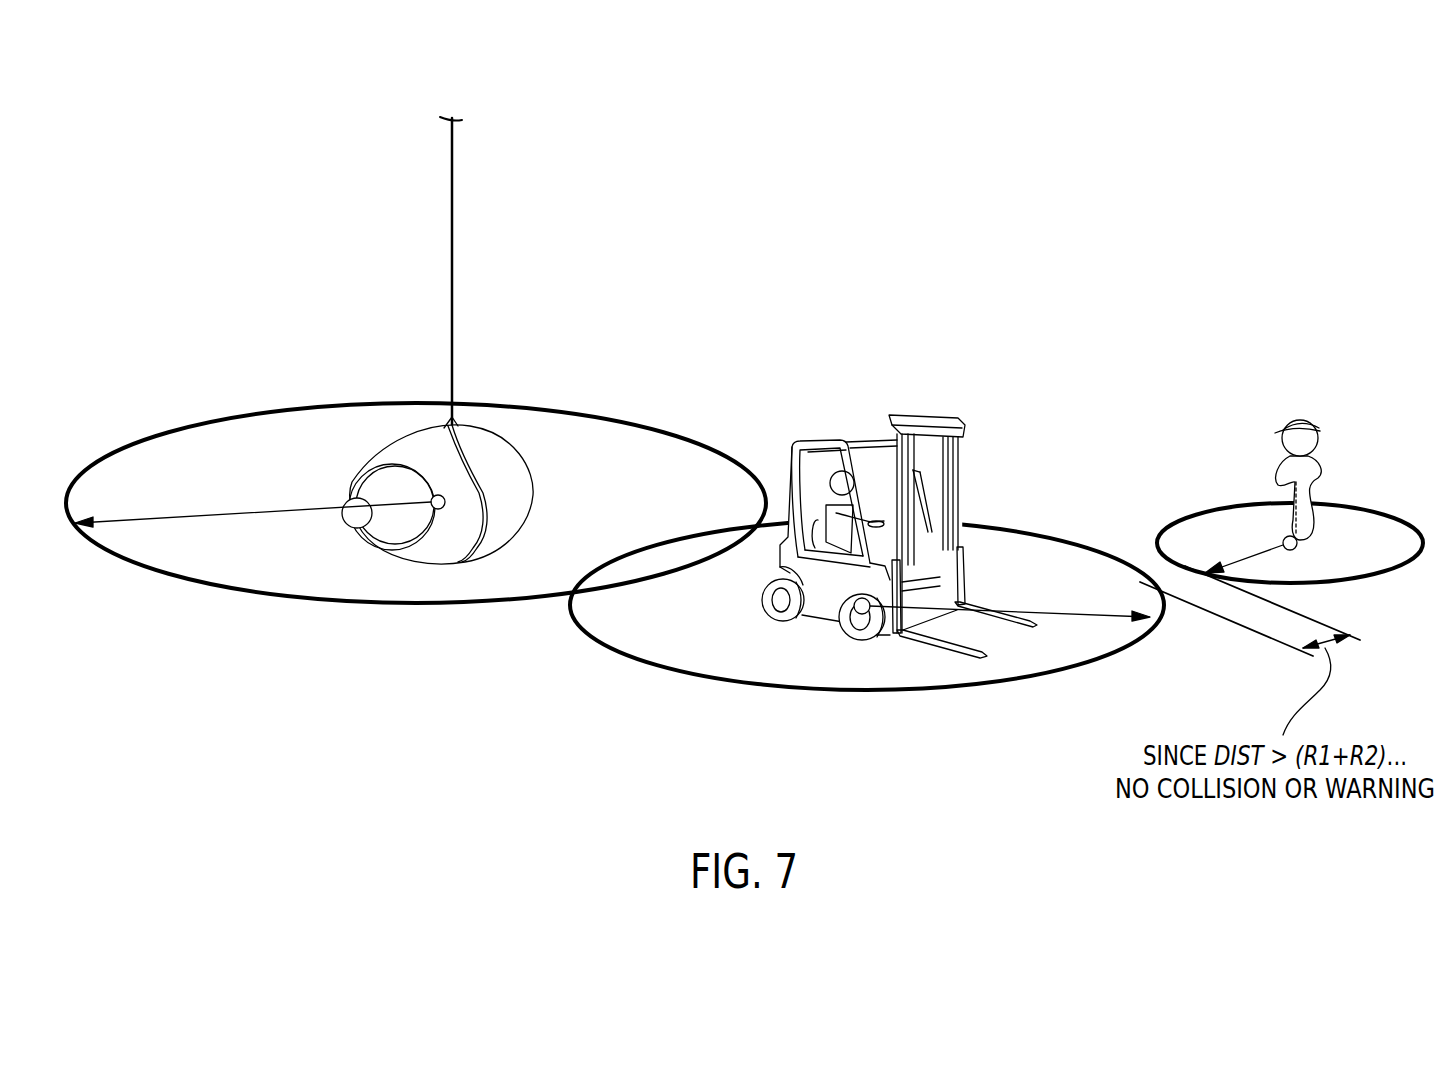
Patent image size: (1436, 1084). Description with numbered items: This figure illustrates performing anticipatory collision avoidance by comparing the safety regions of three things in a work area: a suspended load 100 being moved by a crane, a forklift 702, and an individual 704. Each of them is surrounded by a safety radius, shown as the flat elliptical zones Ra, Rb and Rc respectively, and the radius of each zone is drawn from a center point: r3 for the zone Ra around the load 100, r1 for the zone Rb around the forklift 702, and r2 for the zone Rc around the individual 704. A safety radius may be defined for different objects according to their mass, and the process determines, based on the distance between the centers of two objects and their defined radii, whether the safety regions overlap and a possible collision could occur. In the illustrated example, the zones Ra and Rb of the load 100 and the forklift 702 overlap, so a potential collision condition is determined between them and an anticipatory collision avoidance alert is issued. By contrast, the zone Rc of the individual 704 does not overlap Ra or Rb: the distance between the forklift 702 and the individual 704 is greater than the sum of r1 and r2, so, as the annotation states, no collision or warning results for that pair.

The suspended load / hoisted object 100 is at (533, 476).
The forklift 702 is at (960, 455).
The individual 704 is at (1278, 472).
The safety radius of the engine Ra is at (658, 430).
The safety radius of the forklift Rb is at (1100, 655).
The safety radius of the individual Rc is at (1343, 505).
The safety radius of the object r1 is at (1002, 601).
The safety radius of the individual r2 is at (1244, 546).
The radius r3 of load zone r3 is at (253, 502).